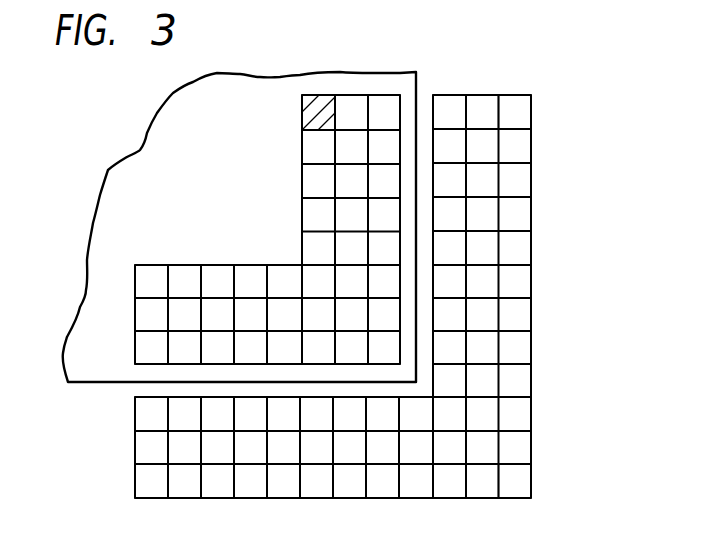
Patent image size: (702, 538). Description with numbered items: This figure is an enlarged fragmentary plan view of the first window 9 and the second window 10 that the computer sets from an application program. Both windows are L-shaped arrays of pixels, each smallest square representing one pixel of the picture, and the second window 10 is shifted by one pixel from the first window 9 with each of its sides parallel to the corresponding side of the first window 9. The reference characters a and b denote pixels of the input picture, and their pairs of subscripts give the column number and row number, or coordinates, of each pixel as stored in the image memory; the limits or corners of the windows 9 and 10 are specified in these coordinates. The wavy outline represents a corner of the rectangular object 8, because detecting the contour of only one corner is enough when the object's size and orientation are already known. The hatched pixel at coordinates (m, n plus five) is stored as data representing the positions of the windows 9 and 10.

The rectangular object 8 is at (77, 367).
The first window 9 is at (348, 224).
The second window 10 is at (357, 281).